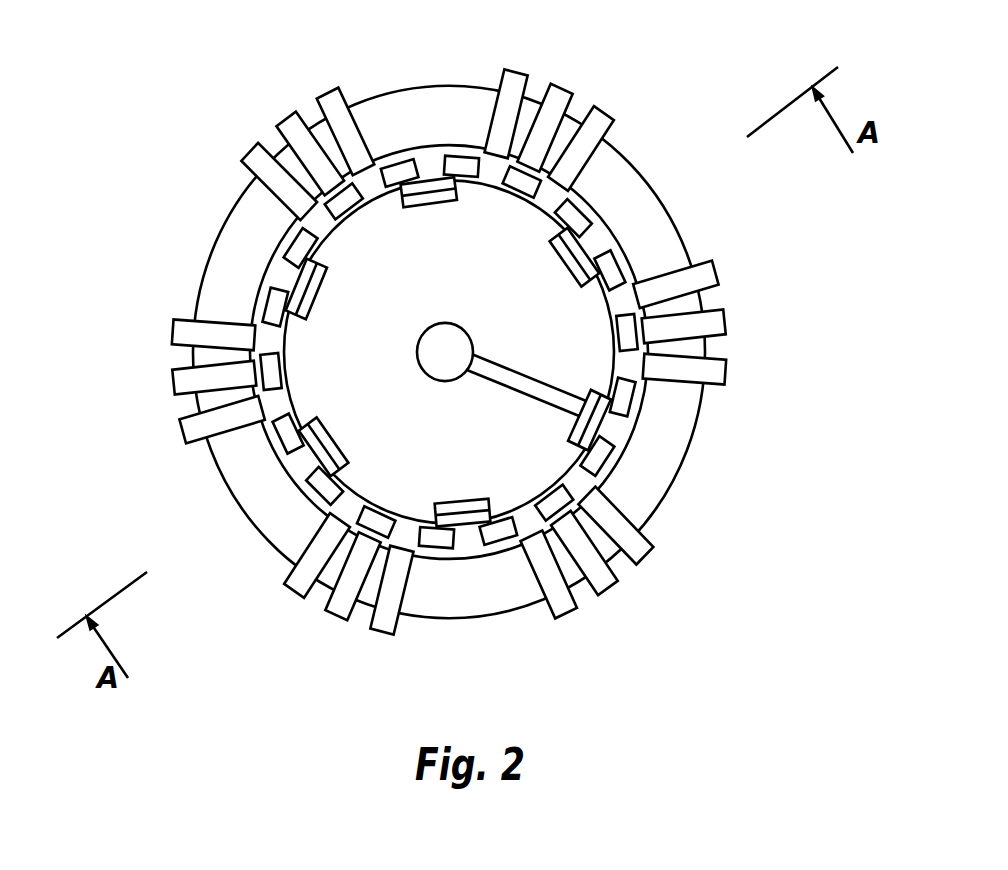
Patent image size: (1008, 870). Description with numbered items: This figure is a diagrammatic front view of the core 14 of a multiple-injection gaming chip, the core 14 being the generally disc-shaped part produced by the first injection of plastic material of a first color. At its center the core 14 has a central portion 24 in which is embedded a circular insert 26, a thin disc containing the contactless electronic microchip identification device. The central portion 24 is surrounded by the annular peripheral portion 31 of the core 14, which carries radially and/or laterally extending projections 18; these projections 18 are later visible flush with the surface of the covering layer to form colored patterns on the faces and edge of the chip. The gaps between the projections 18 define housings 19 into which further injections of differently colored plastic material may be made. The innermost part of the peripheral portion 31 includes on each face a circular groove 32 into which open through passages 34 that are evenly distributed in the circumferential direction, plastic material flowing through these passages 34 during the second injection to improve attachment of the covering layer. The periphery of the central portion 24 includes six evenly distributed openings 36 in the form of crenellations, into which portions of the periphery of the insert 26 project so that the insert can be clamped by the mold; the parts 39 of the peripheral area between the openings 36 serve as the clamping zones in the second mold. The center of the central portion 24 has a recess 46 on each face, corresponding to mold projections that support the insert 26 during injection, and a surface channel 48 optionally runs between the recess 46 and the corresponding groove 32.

The core 14 is at (734, 90).
The projections 18 is at (380, 623).
The housings 19 is at (623, 560).
The central portion 24 is at (462, 289).
The insert 26 is at (315, 450).
The annular peripheral portion 31 is at (401, 88).
The circular groove 32 is at (427, 166).
The through passages 34 is at (597, 457).
The openings 36 is at (467, 540).
The parts of the peripheral area 39 is at (296, 345).
The recess 46 is at (421, 368).
The surface channel 48 is at (510, 387).